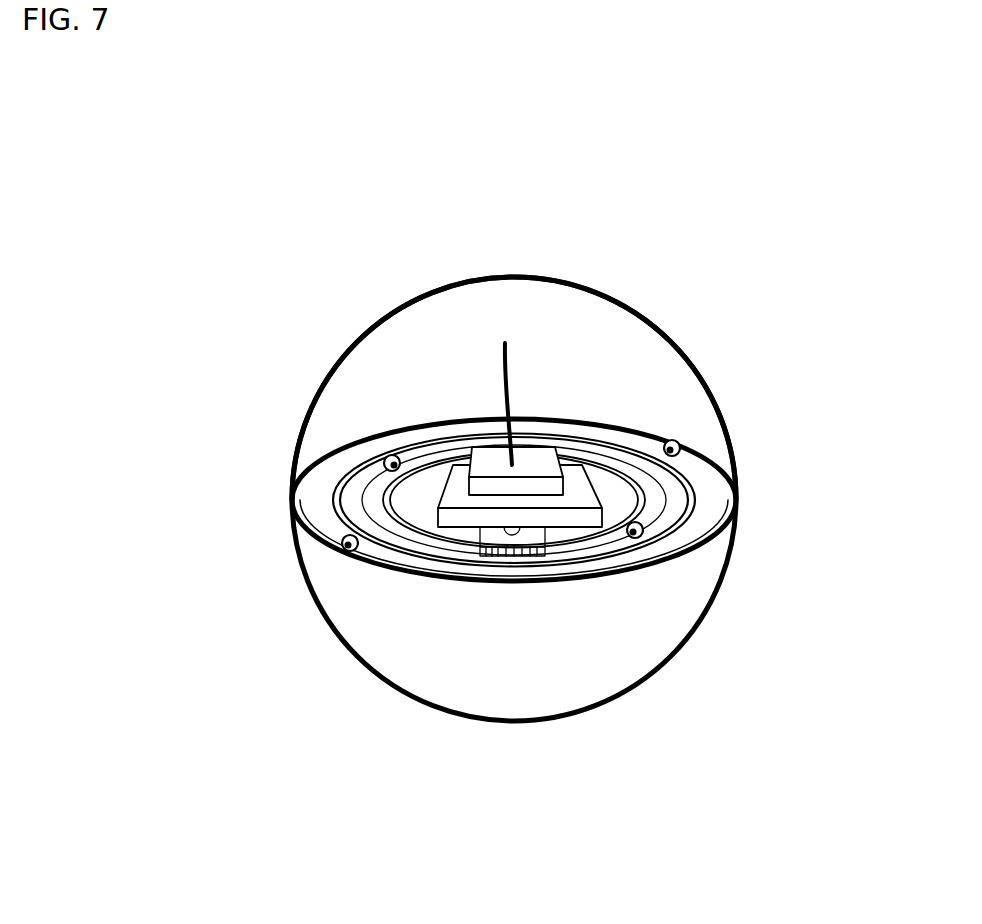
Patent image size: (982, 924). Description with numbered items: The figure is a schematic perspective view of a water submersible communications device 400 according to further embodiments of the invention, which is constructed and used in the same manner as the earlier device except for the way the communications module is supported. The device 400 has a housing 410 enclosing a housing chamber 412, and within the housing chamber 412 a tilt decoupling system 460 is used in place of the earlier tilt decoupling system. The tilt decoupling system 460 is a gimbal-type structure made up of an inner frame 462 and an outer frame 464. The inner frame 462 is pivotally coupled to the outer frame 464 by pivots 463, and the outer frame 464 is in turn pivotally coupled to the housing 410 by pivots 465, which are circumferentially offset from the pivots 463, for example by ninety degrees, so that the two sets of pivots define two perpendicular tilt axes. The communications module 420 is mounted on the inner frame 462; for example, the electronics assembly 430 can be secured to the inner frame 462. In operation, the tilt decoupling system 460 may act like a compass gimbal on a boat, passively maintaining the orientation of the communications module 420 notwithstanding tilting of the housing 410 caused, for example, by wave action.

The water submersible communications device 400 is at (453, 170).
The housing 410 is at (760, 443).
The housing chamber 412 is at (618, 338).
The communications module 420 is at (617, 498).
The electronics assembly 430 is at (531, 462).
The tilt decoupling system 460 is at (445, 405).
The inner frame 462 is at (347, 456).
The pivots 463 is at (389, 455).
The outer frame 464 is at (306, 473).
The pivots 465 is at (344, 537).